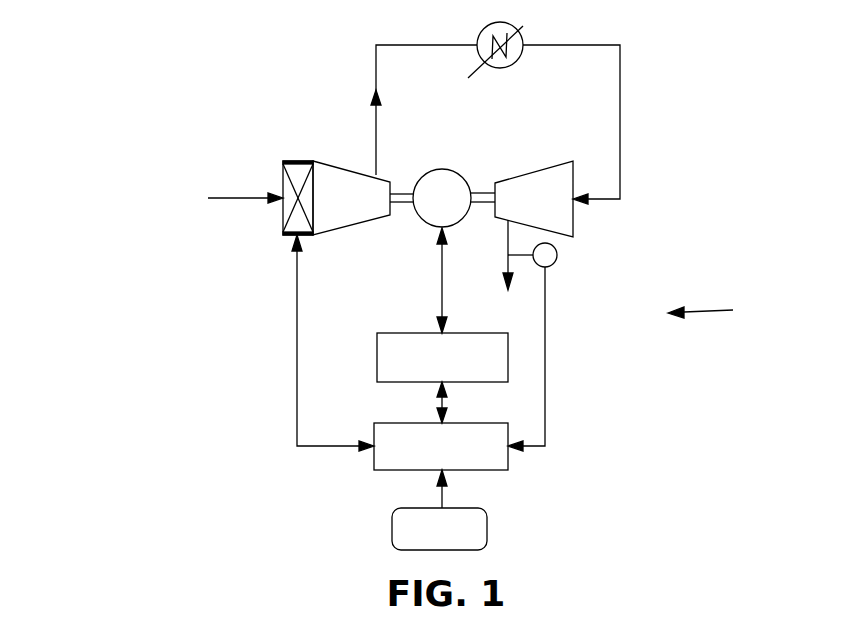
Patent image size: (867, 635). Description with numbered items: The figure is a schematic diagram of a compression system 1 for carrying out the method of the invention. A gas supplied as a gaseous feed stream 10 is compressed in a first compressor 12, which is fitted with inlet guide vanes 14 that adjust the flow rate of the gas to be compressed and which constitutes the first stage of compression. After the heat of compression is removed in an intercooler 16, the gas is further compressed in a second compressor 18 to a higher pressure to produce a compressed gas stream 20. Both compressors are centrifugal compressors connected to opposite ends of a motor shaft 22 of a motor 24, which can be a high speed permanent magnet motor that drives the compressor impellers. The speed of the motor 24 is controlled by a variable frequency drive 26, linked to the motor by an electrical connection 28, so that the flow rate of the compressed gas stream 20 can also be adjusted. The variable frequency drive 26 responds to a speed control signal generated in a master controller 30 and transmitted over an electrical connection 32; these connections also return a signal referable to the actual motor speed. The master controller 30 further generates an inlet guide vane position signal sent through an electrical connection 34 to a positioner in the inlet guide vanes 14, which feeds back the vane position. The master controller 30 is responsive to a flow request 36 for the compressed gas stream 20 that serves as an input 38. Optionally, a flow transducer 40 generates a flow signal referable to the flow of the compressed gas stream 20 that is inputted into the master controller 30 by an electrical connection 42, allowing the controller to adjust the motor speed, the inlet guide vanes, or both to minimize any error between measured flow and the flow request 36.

The compression system 1 is at (708, 312).
The gaseous feed stream 10 is at (249, 203).
The first compressor 12 is at (348, 217).
The inlet guide vanes 14 is at (294, 218).
The intercooler 16 is at (520, 35).
The second compressor 18 is at (537, 183).
The compressed gas stream 20 is at (505, 236).
The motor shaft 22 is at (400, 207).
The motor 24 is at (443, 168).
The variable frequency drive 26 is at (400, 347).
The electrical connection 28 is at (443, 306).
The master controller 30 is at (501, 432).
The electrical connection 32 is at (447, 403).
The electrical connection 34 is at (297, 371).
The flow request 36 is at (392, 523).
The input 38 is at (443, 493).
The flow transducer 40 is at (557, 255).
The electrical connection 42 is at (545, 326).